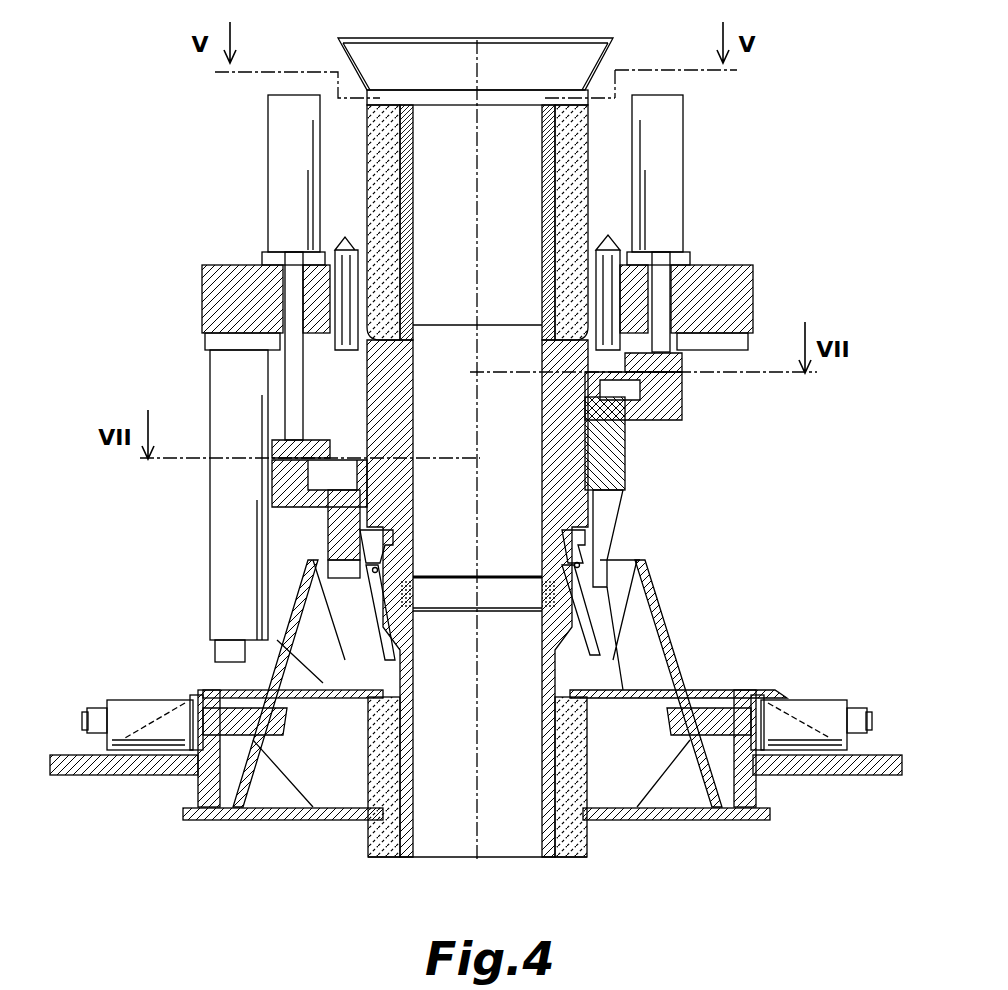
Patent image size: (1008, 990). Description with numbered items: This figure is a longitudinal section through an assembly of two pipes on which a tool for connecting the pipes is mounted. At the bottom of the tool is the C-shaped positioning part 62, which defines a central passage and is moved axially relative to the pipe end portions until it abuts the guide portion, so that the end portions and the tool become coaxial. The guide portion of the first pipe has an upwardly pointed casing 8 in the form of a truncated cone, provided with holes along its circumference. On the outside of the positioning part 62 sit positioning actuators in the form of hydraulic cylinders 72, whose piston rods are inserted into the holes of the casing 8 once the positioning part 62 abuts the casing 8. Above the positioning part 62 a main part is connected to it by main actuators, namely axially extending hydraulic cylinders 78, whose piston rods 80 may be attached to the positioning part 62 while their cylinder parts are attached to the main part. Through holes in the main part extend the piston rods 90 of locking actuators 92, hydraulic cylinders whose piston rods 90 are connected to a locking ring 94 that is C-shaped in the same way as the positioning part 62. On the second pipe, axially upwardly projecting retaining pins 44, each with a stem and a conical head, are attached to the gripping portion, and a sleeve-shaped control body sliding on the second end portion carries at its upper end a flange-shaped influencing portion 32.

The casing 8 is at (665, 626).
The influencing portion 32 is at (643, 425).
The retaining pins 44 is at (610, 282).
The positioning part 62 is at (757, 777).
The hydraulic cylinders 72 is at (820, 697).
The hydraulic cylinders 78 is at (230, 363).
The piston rods 80 is at (233, 656).
The piston rods 90 is at (660, 292).
The locking actuators 92 is at (660, 135).
The locking ring 94 is at (662, 392).